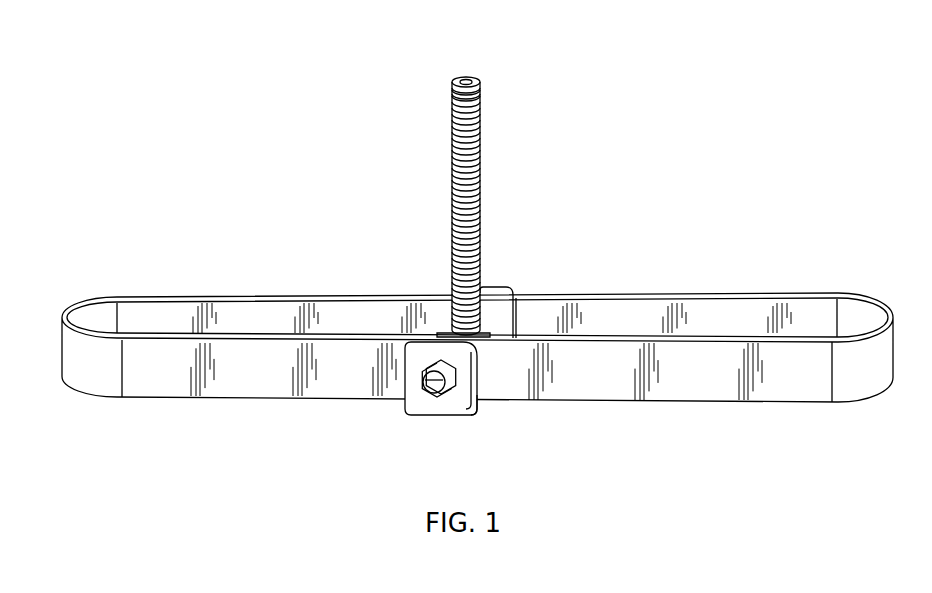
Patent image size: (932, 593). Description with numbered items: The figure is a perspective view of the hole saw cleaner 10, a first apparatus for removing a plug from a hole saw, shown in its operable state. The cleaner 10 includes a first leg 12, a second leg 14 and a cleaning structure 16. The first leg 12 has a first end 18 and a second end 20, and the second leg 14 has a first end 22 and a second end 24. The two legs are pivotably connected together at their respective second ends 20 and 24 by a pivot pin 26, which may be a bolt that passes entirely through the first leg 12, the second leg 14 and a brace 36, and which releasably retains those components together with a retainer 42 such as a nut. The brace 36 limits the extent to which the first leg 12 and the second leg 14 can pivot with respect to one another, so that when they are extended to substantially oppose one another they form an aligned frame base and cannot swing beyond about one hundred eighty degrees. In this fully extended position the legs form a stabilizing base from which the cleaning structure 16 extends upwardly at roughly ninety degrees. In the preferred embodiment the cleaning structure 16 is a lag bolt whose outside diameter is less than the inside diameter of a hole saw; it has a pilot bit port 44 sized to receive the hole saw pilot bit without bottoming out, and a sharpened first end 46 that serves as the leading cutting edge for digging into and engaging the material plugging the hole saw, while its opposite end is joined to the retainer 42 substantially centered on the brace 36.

The hole saw cleaner 10 is at (236, 94).
The first leg 12 is at (210, 262).
The second leg 14 is at (670, 262).
The cleaning structure 16 is at (480, 193).
The first end 18 is at (95, 298).
The second end 20 is at (430, 294).
The first end 22 is at (855, 297).
The second end 24 is at (535, 293).
The pivot pin 26 is at (430, 387).
The brace 36 is at (404, 368).
The retainer 42 is at (455, 382).
The pilot bit port 44 is at (466, 80).
The first end 46 is at (480, 103).